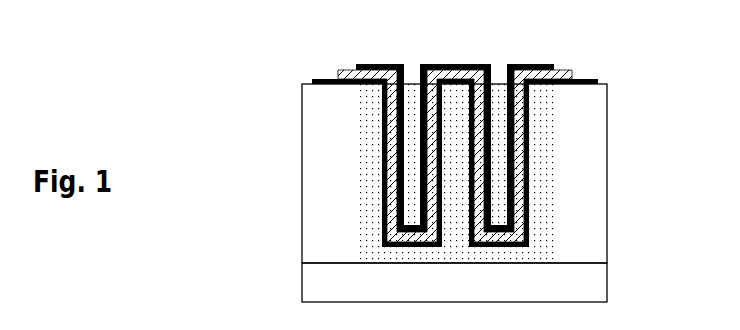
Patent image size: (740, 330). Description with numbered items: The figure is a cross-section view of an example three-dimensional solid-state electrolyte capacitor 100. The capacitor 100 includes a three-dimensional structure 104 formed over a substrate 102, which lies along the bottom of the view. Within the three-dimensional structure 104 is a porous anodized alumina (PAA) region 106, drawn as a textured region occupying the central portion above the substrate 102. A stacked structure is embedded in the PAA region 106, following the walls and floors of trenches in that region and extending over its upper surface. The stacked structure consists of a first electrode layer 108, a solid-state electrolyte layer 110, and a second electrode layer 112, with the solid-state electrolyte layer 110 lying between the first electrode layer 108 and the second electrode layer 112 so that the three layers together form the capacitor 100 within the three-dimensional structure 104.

The 3D solid-state electrolyte capacitor 100 is at (665, 48).
The substrate 102 is at (332, 280).
The 3D structure 104 is at (332, 121).
The porous anodized alumina (PAA) region 106 is at (362, 197).
The first electrode layer 108 is at (336, 79).
The solid-state electrolyte layer 110 is at (393, 66).
The second electrode layer 112 is at (472, 64).